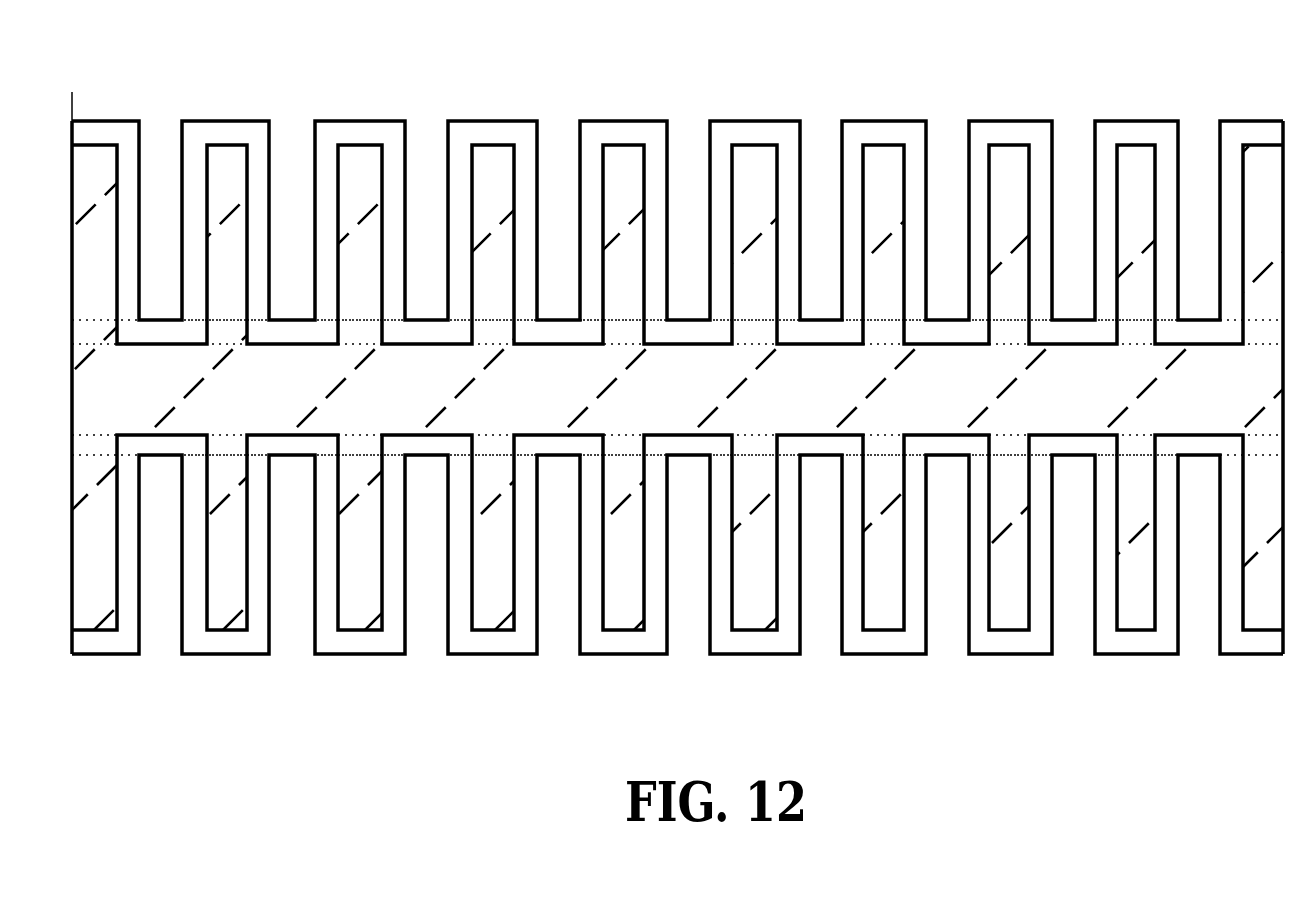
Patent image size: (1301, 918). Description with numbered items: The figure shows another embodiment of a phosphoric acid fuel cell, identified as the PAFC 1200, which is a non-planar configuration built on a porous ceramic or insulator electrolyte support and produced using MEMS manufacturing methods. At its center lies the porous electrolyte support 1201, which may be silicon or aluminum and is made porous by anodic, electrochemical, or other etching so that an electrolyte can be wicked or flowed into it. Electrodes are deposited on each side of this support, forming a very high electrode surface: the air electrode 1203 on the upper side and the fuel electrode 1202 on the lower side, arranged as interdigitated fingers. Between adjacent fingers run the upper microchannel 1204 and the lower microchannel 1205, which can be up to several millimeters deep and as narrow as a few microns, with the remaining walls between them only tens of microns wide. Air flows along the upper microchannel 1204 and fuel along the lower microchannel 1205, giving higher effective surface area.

The PAFC 1200 is at (392, 38).
The porous electrolyte support 1201 is at (568, 405).
The fuel electrode 1202 is at (477, 657).
The air electrode 1203 is at (622, 121).
The upper microchannel 1204 is at (1065, 140).
The lower microchannel 1205 is at (1077, 628).